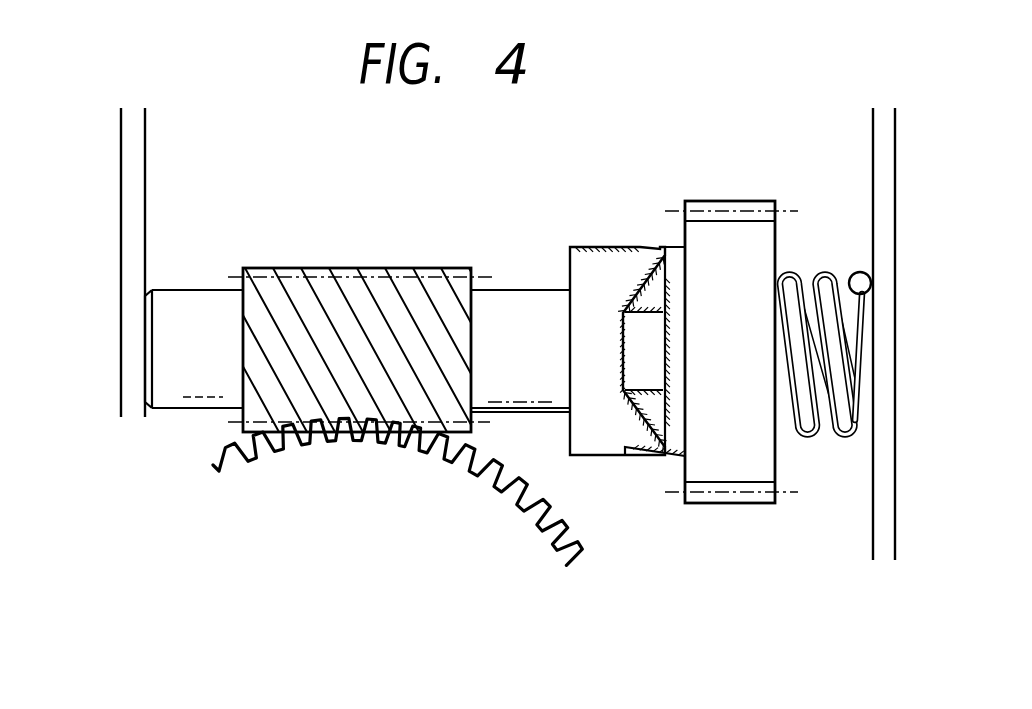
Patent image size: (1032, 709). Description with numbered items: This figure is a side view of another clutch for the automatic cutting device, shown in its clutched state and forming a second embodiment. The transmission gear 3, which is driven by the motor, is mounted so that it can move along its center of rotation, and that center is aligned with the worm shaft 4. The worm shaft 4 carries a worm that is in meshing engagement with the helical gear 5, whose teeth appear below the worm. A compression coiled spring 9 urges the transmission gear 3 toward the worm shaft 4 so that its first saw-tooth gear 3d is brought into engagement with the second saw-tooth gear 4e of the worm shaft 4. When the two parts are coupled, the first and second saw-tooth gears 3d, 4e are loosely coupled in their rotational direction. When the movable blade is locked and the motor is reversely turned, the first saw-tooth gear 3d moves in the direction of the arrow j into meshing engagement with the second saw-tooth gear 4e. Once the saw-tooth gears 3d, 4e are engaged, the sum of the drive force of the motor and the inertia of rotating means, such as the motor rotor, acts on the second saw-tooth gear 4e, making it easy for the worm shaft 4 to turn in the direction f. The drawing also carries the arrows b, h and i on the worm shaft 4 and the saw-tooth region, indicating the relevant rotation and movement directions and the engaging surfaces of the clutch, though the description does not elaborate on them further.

The transmission gear 3 is at (751, 202).
The first saw-tooth gear 3d is at (660, 280).
The worm shaft 4 is at (443, 272).
The second saw-tooth gear 4e is at (628, 405).
The helical gear 5 is at (403, 503).
The compression coiled spring 9 is at (860, 332).
The direction f is at (230, 258).
The rotation direction b is at (506, 436).
The inclined surfaces h is at (652, 312).
The movement direction i is at (640, 300).
The arrow j is at (642, 442).